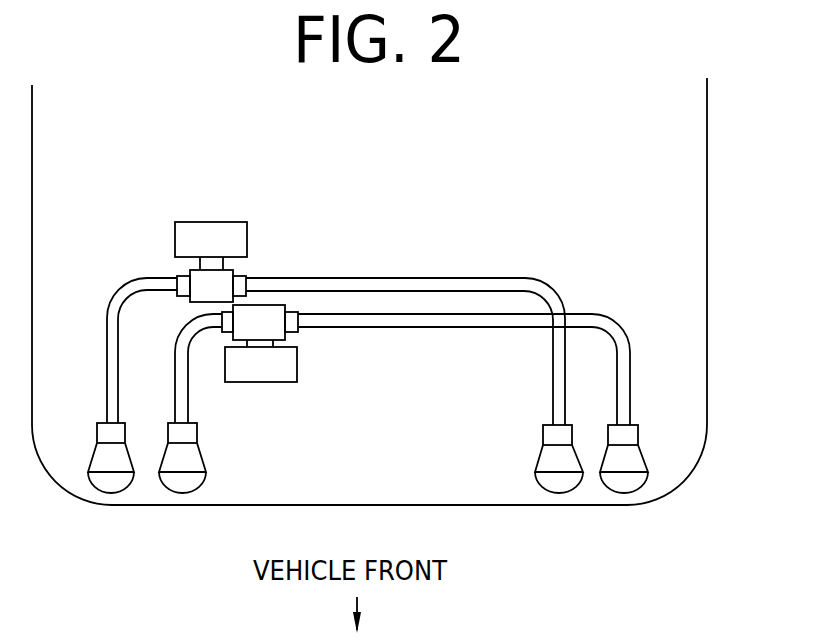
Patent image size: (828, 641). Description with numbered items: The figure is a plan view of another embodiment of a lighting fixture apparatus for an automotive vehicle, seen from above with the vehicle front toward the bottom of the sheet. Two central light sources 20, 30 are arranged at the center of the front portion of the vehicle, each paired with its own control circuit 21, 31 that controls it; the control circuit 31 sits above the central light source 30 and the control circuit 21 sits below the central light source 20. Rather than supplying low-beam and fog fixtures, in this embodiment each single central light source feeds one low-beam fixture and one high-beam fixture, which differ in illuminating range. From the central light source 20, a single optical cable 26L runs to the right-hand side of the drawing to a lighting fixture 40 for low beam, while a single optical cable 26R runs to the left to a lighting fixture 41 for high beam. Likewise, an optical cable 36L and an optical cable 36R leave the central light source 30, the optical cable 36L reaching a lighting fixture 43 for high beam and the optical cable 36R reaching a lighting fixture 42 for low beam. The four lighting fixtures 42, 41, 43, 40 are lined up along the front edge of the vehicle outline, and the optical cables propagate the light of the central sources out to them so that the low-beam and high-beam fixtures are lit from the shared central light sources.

The central light source 20 is at (276, 334).
The control circuit 21 is at (296, 382).
The central light source 30 is at (194, 277).
The control circuit 31 is at (178, 222).
The optical cable 26R is at (188, 402).
The optical cable 26L is at (630, 405).
The optical cable 36R is at (107, 343).
The optical cable 36L is at (553, 405).
The lighting fixture for low beam 40 is at (624, 482).
The lighting fixture for high beam 41 is at (184, 482).
The lighting fixture for low beam 42 is at (112, 482).
The lighting fixture for high beam 43 is at (560, 482).